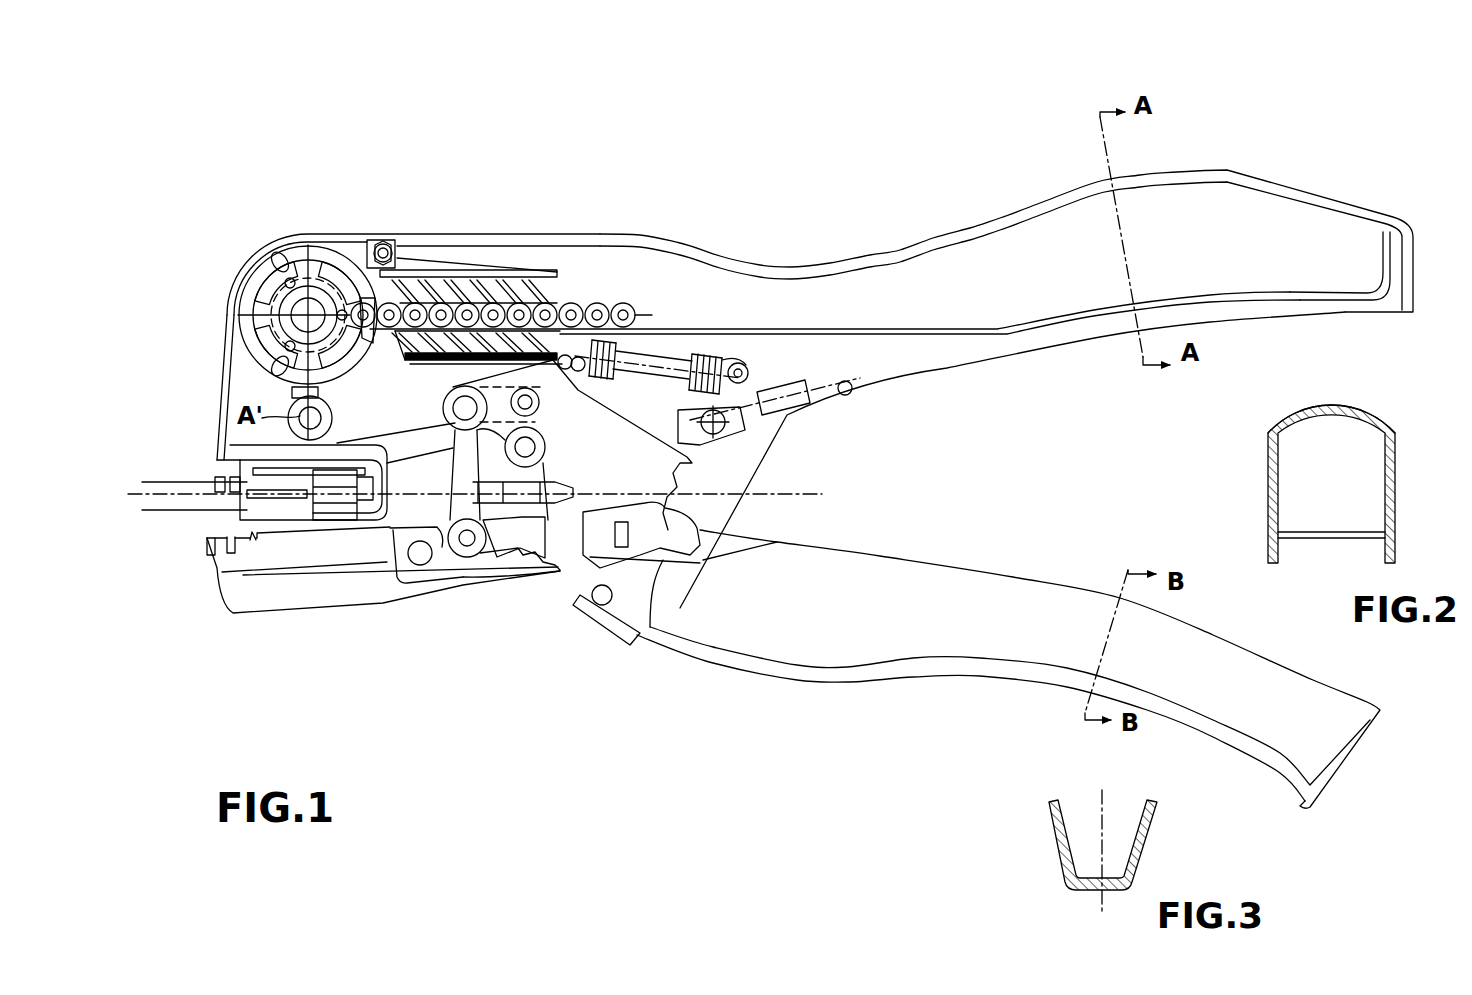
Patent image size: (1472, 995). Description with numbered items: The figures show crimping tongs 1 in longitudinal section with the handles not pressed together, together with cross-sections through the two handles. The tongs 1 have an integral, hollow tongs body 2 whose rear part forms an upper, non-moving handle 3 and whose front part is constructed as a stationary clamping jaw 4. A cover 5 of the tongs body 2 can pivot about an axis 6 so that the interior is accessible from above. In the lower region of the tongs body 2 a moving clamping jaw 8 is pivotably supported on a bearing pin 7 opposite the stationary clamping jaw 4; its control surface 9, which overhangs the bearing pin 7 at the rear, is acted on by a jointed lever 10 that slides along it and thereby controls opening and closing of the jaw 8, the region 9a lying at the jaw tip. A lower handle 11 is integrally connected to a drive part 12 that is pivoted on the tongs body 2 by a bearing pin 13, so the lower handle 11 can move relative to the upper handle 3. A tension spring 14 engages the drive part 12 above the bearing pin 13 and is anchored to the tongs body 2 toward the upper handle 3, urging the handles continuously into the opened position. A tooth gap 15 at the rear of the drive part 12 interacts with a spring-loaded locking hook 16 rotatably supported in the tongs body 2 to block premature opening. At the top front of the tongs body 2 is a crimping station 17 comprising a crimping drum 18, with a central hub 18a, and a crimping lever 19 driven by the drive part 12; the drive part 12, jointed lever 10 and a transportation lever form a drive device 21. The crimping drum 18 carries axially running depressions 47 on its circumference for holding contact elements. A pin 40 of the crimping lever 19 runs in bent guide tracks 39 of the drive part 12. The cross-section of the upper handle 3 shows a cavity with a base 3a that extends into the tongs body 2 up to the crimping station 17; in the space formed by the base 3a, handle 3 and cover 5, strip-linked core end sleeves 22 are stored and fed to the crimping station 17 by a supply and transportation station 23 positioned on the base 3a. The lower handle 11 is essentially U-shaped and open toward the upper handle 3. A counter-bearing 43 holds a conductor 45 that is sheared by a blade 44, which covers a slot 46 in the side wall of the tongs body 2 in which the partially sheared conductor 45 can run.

In FIG. 1, the tongs 1 is at (843, 218).
In FIG. 1, the tongs body 2 is at (733, 250).
In FIG. 1, the upper handle 3 is at (1345, 300).
In FIG. 2, the upper handle 3 is at (1395, 473).
In FIG. 1, the base 3a is at (897, 327).
In FIG. 2, the base 3a is at (1302, 538).
In FIG. 1, the stationary clamping jaw 4 is at (240, 433).
In FIG. 1, the cover 5 is at (1282, 183).
In FIG. 2, the cover 5 is at (1283, 423).
In FIG. 1, the axis 6 is at (383, 243).
In FIG. 1, the bearing pin 7 is at (412, 562).
In FIG. 1, the moving clamping jaw 8 is at (257, 560).
In FIG. 1, the control surface 9 is at (497, 580).
In FIG. 1, the lever tip 9a is at (540, 570).
In FIG. 1, the jointed lever 10 is at (452, 560).
In FIG. 1, the lower handle 11 is at (1070, 597).
In FIG. 3, the lower handle 11 is at (1151, 840).
In FIG. 1, the drive part 12 is at (660, 433).
In FIG. 1, the bearing pin 13 is at (530, 455).
In FIG. 1, the tension spring 14 is at (773, 337).
In FIG. 1, the tooth gap 15 is at (680, 460).
In FIG. 1, the locking hook 16 is at (717, 443).
In FIG. 1, the crimping station 17 is at (255, 238).
In FIG. 1, the crimping drum 18 is at (243, 314).
In FIG. 1, the wheel hub 18a is at (293, 316).
In FIG. 1, the crimping lever 19 is at (427, 423).
In FIG. 1, the drive device 21 is at (628, 408).
In FIG. 1, the core end sleeves 22 is at (617, 303).
In FIG. 1, the supply and transportation station 23 is at (533, 268).
In FIG. 1, the guide tracks 39 is at (536, 413).
In FIG. 1, the pin 40 is at (542, 438).
In FIG. 1, the counter-bearing 43 is at (638, 633).
In FIG. 1, the blade 44 is at (657, 560).
In FIG. 1, the conductor 45 is at (602, 607).
In FIG. 1, the slot 46 is at (705, 560).
In FIG. 1, the depression 47 is at (353, 298).